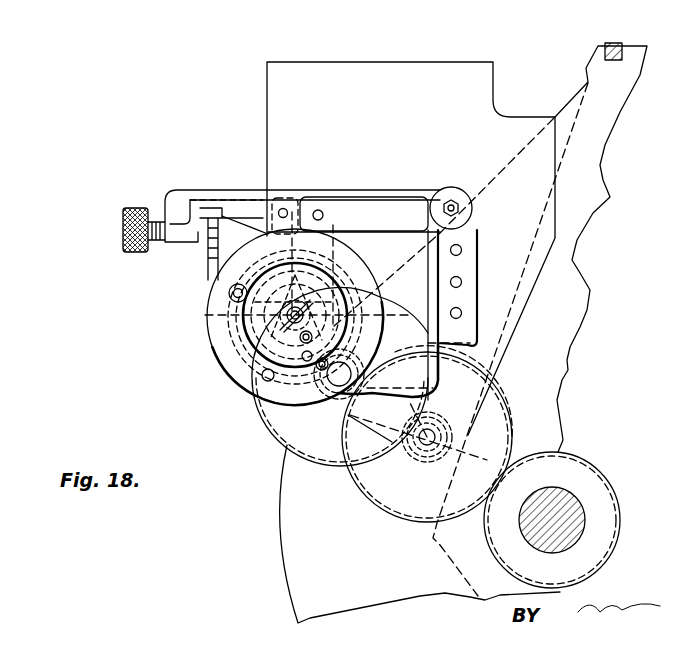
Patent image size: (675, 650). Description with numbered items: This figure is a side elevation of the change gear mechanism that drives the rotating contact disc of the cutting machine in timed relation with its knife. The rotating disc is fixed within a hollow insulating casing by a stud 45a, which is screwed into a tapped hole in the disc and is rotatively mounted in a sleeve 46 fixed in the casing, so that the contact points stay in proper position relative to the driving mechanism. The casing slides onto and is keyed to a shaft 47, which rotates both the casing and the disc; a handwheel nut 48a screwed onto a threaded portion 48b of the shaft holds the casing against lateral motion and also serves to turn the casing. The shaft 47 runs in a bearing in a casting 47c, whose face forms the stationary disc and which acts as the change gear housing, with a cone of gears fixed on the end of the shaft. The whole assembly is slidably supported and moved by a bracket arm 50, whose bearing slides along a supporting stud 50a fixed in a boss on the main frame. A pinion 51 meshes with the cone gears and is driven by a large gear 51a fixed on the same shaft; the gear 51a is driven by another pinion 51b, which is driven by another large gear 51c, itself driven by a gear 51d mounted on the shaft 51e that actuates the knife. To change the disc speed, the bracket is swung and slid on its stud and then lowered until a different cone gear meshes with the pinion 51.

The stud 45a is at (234, 288).
The sleeve 46 is at (232, 295).
The shaft 47 is at (291, 317).
The casting 47c is at (220, 326).
The handwheel nut 48a is at (252, 357).
The threaded portion 48b is at (220, 380).
The bracket arm 50 is at (360, 205).
The supporting stud 50a is at (456, 209).
The pinion 51 is at (428, 392).
The large gear 51a is at (320, 464).
The pinion 51b is at (498, 410).
The large gear 51c is at (515, 447).
The gear 51d is at (593, 460).
The shaft 51e is at (550, 510).